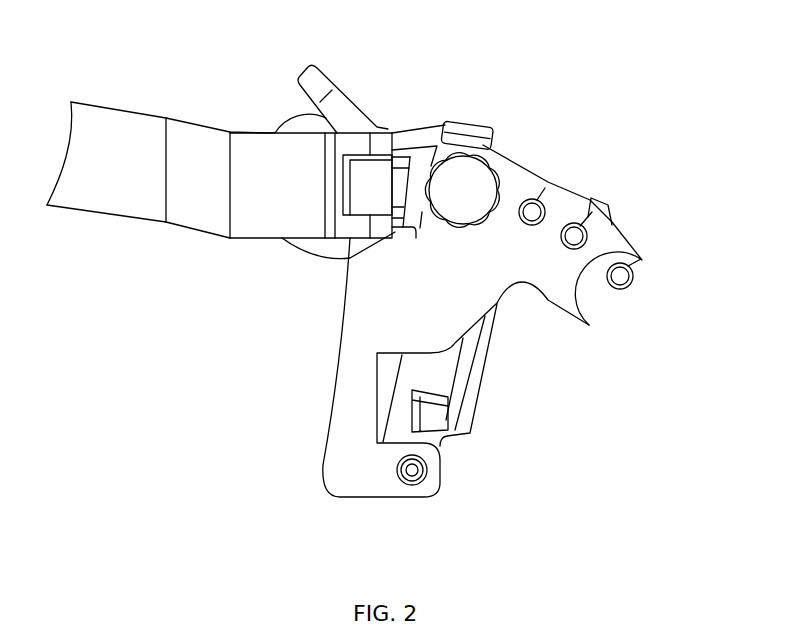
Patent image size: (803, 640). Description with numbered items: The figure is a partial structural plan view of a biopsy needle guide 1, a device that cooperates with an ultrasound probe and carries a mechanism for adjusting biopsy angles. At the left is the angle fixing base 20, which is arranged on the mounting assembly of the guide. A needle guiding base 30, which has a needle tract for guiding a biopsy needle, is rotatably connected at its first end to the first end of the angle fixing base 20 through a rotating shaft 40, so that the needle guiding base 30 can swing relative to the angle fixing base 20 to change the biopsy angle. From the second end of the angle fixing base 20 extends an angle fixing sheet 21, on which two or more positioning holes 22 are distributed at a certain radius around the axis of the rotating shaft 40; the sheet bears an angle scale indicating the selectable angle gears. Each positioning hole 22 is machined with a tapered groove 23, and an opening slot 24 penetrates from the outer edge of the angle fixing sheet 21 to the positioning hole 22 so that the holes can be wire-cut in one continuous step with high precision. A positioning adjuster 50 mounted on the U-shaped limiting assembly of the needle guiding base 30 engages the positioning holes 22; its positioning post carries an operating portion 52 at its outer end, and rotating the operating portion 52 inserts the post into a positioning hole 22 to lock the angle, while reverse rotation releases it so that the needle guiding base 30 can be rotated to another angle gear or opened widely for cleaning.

The biopsy needle guide 1 is at (173, 212).
The angle fixing base 20 is at (340, 358).
The angle fixing sheet 21 is at (599, 321).
The positioning holes 22 is at (542, 201).
The tapered groove 23 is at (524, 202).
The opening slot 24 is at (545, 187).
The needle guiding base 30 is at (415, 368).
The rotating shaft 40 is at (406, 471).
The positioning adjuster 50 is at (466, 187).
The operating portion 52 is at (415, 222).